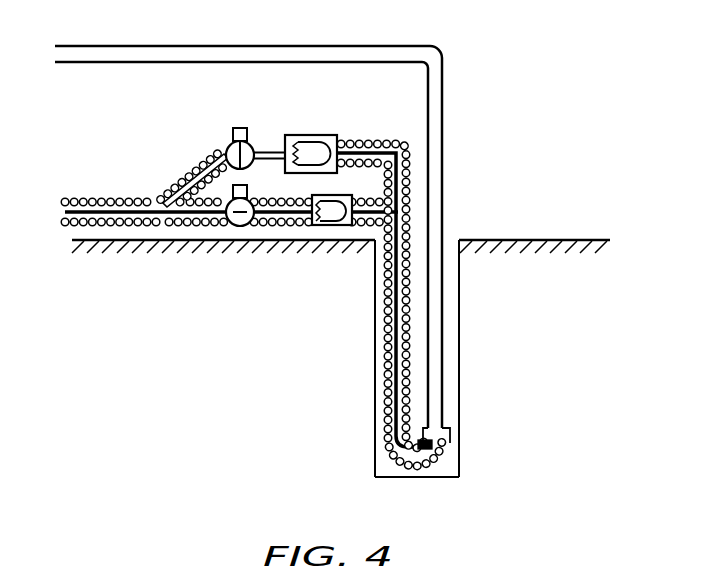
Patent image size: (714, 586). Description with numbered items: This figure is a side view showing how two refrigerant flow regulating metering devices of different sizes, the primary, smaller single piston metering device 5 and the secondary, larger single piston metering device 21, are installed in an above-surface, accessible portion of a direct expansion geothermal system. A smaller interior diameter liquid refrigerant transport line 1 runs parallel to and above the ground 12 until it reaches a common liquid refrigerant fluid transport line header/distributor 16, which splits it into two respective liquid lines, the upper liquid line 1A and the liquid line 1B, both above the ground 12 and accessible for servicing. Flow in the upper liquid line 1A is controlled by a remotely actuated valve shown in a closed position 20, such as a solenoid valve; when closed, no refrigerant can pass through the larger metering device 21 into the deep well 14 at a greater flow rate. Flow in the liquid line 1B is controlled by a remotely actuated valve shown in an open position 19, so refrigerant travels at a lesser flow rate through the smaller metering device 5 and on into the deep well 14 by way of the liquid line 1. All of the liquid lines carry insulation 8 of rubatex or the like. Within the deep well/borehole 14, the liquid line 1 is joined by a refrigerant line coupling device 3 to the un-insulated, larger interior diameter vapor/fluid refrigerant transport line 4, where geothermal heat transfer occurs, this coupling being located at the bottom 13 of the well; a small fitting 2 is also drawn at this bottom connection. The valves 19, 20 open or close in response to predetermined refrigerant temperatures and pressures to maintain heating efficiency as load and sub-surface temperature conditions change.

The liquid refrigerant transport line 1 is at (396, 287).
The upper liquid line 1A is at (202, 177).
The liquid line 1B is at (188, 205).
The bottom fitting 2 is at (440, 458).
The refrigerant line coupling device 3 is at (450, 435).
The vapor/fluid refrigerant transport line 4 is at (435, 350).
The single piston metering device 5 is at (327, 215).
The insulation 8 is at (388, 337).
The ground 12 is at (560, 248).
The bottom 13 is at (375, 477).
The deep well/borehole 14 is at (453, 288).
The liquid refrigerant fluid transport line header/distributor 16 is at (165, 197).
The remotely actuated valve in an open position 19 is at (238, 227).
The remotely actuated valve in a closed position 20 is at (232, 143).
The single piston metering device 21 is at (312, 148).